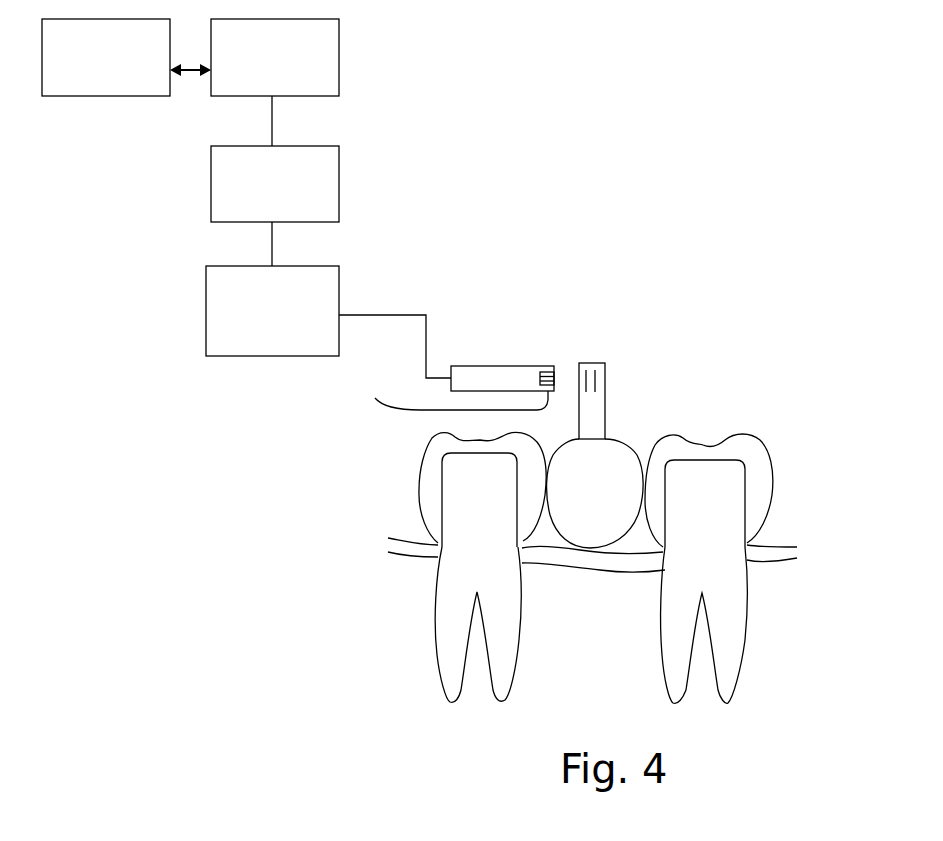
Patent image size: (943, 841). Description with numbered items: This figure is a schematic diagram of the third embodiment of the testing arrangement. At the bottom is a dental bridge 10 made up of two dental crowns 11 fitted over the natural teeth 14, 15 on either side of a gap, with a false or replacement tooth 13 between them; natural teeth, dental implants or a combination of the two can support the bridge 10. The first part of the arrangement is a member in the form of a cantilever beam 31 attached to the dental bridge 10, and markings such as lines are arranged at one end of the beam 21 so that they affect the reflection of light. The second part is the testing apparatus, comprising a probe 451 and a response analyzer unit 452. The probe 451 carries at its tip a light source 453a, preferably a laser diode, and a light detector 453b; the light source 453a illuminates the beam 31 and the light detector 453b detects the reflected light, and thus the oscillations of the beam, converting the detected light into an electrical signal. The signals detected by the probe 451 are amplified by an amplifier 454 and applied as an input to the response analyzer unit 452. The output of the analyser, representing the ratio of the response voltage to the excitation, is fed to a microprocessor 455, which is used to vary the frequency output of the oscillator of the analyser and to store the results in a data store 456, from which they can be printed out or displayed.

The data store 456 is at (106, 57).
The microprocessor 455 is at (275, 57).
The response analyzer unit 452 is at (275, 184).
The amplifier 454 is at (272, 311).
The probe 451 is at (478, 364).
The light source 453a is at (548, 364).
The light detector 453b is at (436, 394).
The beam 21 is at (589, 358).
The cantilever beam 31 is at (622, 397).
The dental bridge 10 is at (348, 493).
The dental crowns 11 is at (425, 438).
The replacement tooth 13 is at (593, 530).
The natural tooth 14 is at (435, 637).
The natural tooth 15 is at (748, 643).